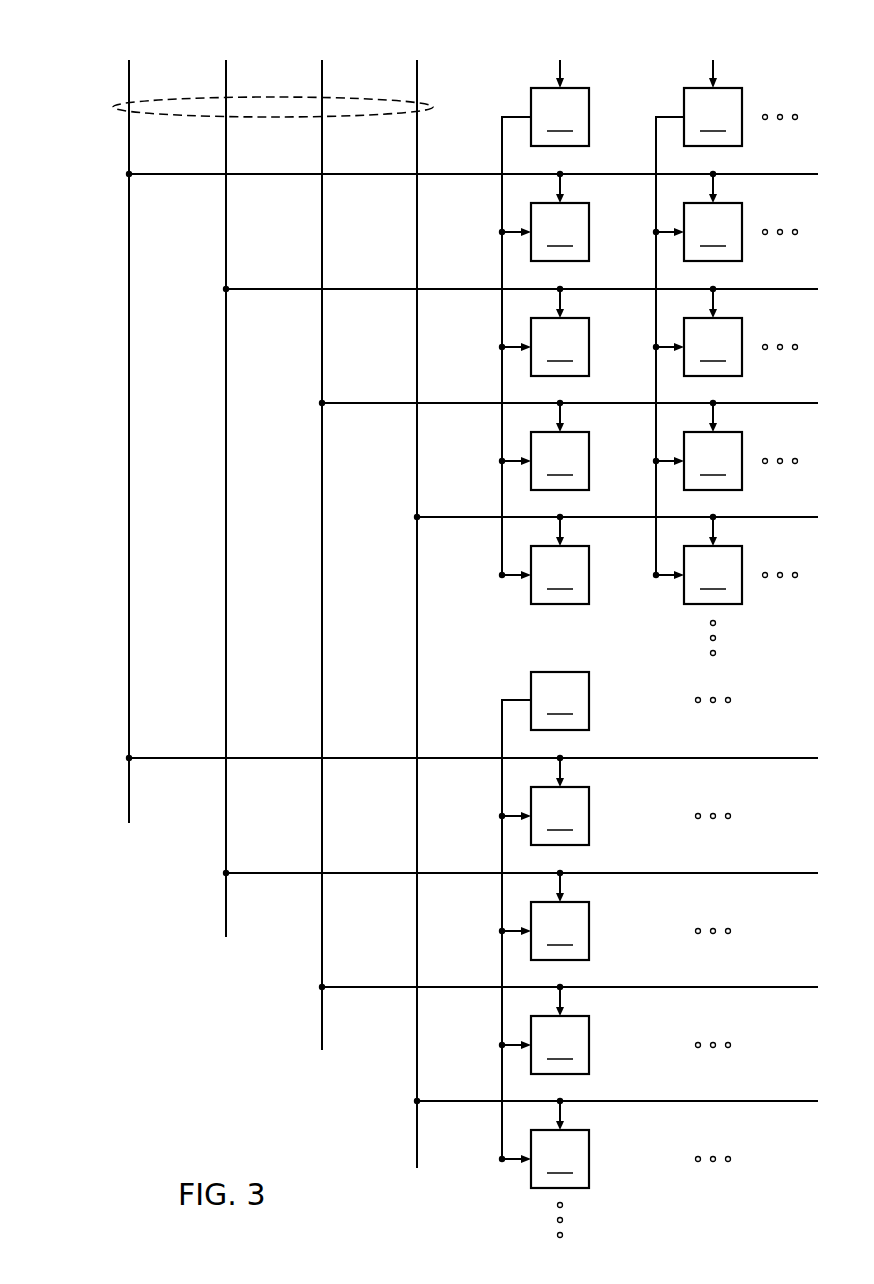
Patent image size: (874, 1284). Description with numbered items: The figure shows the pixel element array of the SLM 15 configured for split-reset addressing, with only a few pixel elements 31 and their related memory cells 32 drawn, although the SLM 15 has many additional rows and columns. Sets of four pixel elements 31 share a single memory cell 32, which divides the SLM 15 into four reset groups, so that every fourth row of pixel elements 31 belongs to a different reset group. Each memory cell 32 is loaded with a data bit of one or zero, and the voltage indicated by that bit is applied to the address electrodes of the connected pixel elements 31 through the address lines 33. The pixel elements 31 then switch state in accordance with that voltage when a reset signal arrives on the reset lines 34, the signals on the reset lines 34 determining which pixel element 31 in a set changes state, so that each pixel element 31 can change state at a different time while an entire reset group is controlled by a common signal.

The SLM 15 is at (795, 42).
The pixel element 31 is at (636, 695).
The memory cell 32 is at (636, 409).
The address line 33 is at (502, 158).
The reset line 34 is at (113, 107).